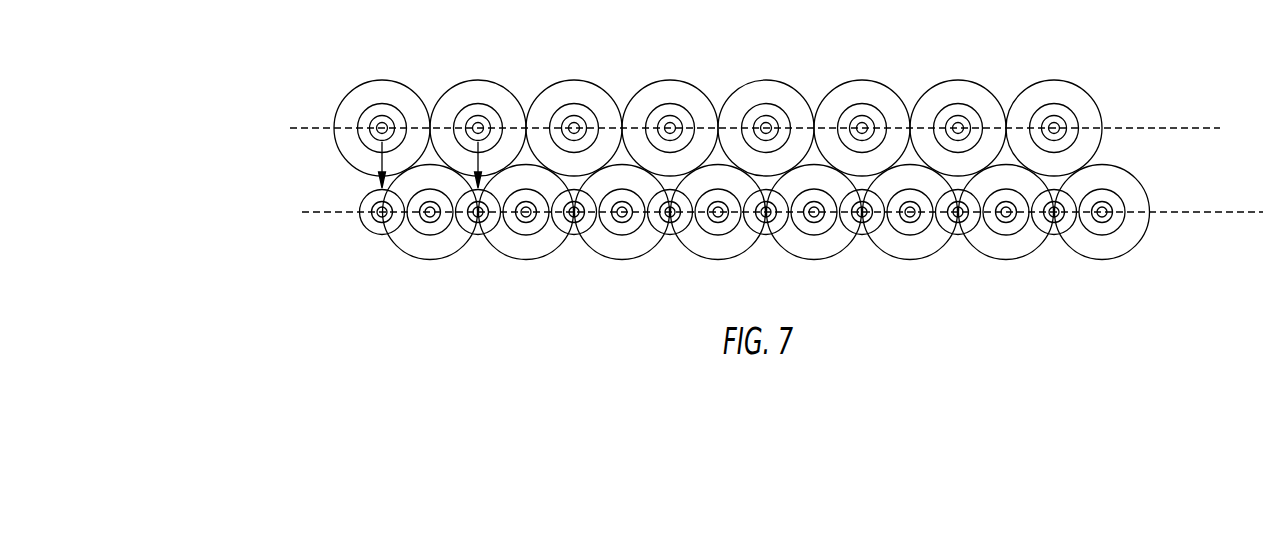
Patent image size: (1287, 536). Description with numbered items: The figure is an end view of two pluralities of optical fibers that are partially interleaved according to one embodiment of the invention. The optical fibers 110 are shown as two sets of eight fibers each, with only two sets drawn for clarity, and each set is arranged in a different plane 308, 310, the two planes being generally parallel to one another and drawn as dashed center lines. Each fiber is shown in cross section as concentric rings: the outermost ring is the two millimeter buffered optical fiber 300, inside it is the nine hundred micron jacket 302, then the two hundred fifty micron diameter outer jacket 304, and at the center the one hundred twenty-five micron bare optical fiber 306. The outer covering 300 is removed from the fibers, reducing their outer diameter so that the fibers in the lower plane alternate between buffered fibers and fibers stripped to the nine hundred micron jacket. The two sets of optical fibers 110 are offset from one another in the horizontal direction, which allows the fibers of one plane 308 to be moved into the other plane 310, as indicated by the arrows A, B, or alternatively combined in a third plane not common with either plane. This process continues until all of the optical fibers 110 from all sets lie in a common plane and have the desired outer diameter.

The optical fibers 110 is at (479, 80).
The 2 mm buffered optical fiber 300 is at (981, 86).
The 900 micron jacket 302 is at (1123, 222).
The 250 micron diameter outer jacket 304 is at (1101, 224).
The 125 micron bare optical fiber 306 is at (1093, 219).
The plane 308 is at (299, 128).
The plane 310 is at (311, 212).
The arrow A is at (380, 176).
The arrow B is at (448, 175).